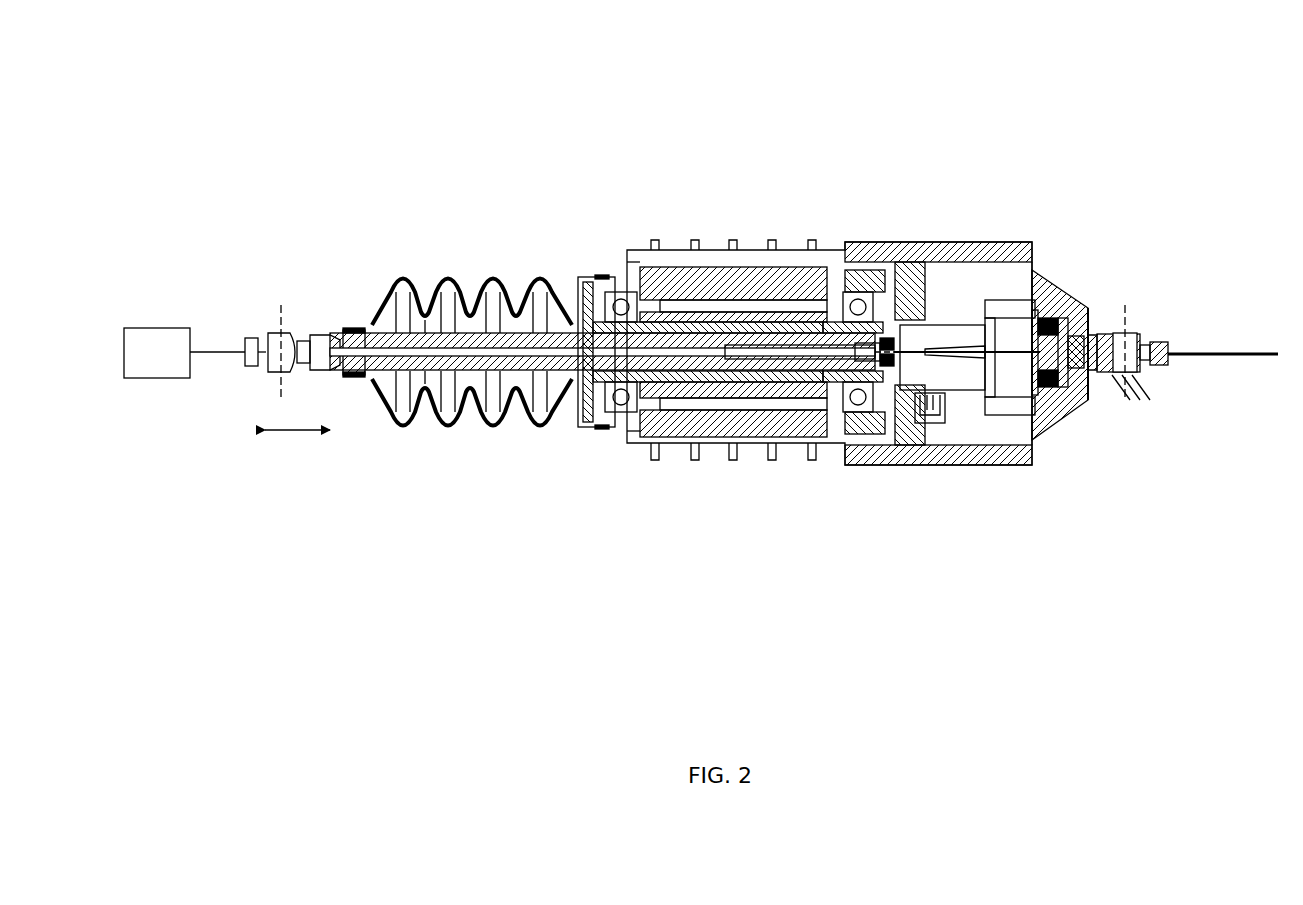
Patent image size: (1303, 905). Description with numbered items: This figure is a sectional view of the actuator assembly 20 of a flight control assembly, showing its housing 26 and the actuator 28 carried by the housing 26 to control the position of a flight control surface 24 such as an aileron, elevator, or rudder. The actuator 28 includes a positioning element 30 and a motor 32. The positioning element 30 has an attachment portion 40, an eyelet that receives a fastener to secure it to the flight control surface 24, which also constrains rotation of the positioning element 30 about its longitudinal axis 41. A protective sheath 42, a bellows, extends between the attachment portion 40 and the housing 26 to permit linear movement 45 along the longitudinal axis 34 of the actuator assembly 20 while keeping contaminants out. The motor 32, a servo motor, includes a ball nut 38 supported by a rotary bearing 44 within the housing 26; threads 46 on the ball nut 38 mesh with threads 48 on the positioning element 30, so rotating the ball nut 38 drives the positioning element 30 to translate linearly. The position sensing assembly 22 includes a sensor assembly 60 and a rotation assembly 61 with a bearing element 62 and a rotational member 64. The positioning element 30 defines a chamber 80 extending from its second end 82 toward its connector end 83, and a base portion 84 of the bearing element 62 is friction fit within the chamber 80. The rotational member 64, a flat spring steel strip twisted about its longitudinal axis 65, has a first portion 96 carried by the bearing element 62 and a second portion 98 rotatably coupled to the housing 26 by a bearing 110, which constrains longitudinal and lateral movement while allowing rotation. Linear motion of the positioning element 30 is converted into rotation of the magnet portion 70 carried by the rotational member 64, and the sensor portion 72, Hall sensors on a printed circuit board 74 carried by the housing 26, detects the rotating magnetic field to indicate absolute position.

The actuator assembly 20 is at (766, 92).
The position sensing assembly 22 is at (968, 328).
The flight control surface 24 is at (184, 353).
The housing 26 is at (1053, 418).
The actuator 28 is at (670, 213).
The positioning element 30 is at (547, 328).
The motor 32 is at (755, 262).
The longitudinal axis 34 is at (1208, 353).
The ball nut 38 is at (612, 388).
The attachment portion 40 is at (264, 325).
The longitudinal axis 41 is at (448, 350).
The protective sheath 42 is at (400, 283).
The rotary bearing 44 is at (616, 272).
The linear movement 45 is at (295, 431).
The threads 46 is at (609, 432).
The threads 48 is at (447, 425).
The sensor assembly 60 is at (1096, 316).
The rotation assembly 61 is at (902, 338).
The bearing element 62 is at (893, 400).
The rotational member 64 is at (956, 365).
The longitudinal axis 65 is at (940, 349).
The magnet portion 70 is at (1068, 330).
The sensor portion 72 is at (1090, 342).
The printed circuit board 74 is at (1093, 376).
The chamber 80 is at (662, 356).
The second end 82 is at (837, 376).
The connector end 83 is at (438, 228).
The base portion 84 is at (834, 343).
The first portion 96 is at (731, 373).
The second portion 98 is at (1037, 374).
The bearing 110 is at (1044, 312).